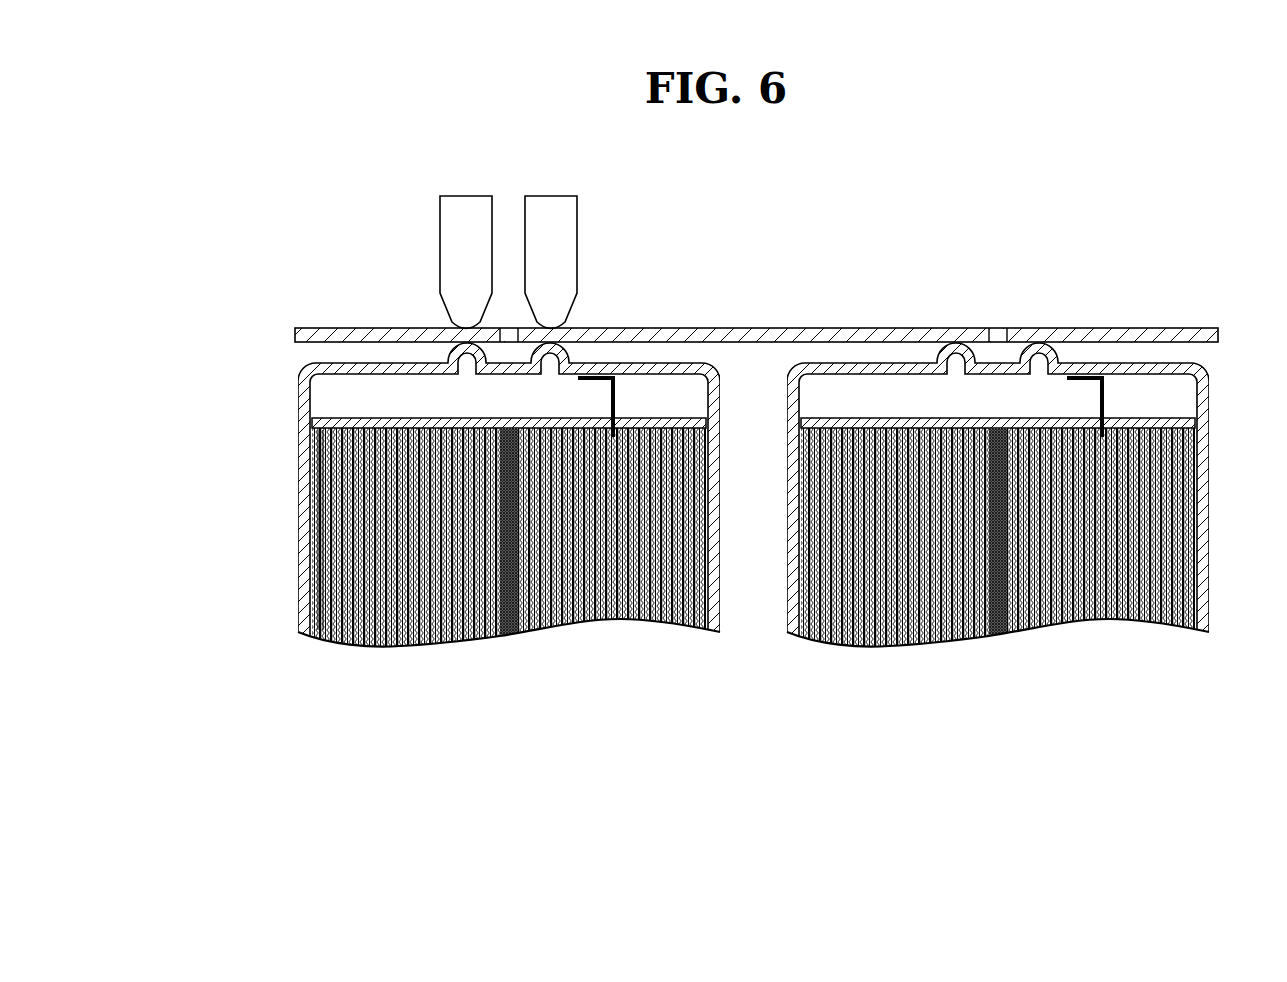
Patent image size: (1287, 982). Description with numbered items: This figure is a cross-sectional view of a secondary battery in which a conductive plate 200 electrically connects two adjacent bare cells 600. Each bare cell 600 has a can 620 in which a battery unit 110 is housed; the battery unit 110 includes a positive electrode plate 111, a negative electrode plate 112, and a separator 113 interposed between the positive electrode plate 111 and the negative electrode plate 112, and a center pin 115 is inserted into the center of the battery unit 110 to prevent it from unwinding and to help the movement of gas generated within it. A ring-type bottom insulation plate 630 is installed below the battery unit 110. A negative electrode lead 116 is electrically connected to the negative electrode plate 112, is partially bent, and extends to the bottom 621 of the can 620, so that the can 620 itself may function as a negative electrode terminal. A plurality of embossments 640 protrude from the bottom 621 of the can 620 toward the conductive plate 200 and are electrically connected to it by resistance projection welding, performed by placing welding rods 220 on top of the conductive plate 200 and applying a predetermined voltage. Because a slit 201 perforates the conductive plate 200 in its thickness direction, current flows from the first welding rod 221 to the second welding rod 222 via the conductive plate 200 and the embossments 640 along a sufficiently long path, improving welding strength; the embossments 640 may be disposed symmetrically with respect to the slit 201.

The battery unit 110 is at (230, 503).
The positive electrode plate 111 is at (320, 503).
The negative electrode plate 112 is at (325, 562).
The separator 113 is at (322, 537).
The center pin 115 is at (512, 625).
The negative electrode lead 116 is at (612, 404).
The conductive plate 200 is at (772, 318).
The slit 201 is at (508, 328).
The welding rods 220 is at (462, 110).
The first welding rod 221 is at (466, 205).
The second welding rod 222 is at (560, 207).
The bare cell 600 is at (338, 662).
The can 620 is at (283, 412).
The bottom of the can 621 is at (303, 368).
The ring-type bottom insulation plate 630 is at (330, 418).
The embossments 640 is at (452, 347).